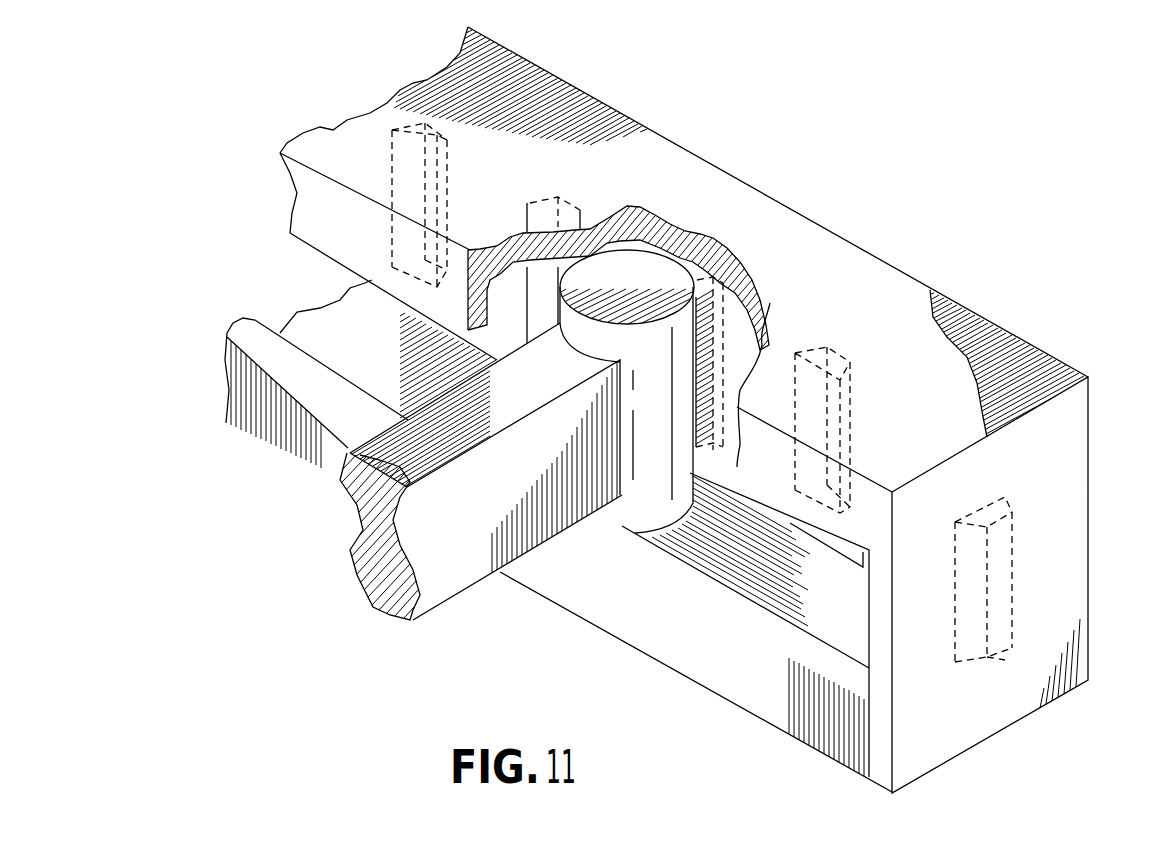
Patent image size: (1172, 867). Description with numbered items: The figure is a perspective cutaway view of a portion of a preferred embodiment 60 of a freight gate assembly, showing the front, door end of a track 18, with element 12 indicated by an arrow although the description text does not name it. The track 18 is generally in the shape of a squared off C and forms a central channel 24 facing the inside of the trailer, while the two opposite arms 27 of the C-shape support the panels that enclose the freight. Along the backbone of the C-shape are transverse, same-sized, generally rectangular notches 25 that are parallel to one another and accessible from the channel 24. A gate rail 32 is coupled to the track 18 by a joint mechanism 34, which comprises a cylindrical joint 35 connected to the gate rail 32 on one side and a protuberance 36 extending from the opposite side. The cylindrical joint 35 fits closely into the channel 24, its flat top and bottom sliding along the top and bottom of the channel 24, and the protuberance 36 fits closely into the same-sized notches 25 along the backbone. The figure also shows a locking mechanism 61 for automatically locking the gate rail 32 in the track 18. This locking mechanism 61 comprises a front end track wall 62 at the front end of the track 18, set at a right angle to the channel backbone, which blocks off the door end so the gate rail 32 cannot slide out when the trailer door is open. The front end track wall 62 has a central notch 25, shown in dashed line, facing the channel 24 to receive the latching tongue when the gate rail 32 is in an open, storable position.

The base block 12 is at (985, 283).
The track 18 is at (870, 274).
The central channel 24 is at (297, 328).
The notch 25 is at (527, 220).
The arm 27 is at (713, 660).
The gate rail 32 is at (472, 518).
The joint mechanism 34 is at (697, 253).
The cylindrical joint 35 is at (668, 436).
The protuberance 36 is at (770, 303).
The preferred embodiment of the freight gate assembly 60 is at (735, 127).
The locking mechanism 61 is at (1100, 398).
The front end track wall 62 is at (1073, 575).